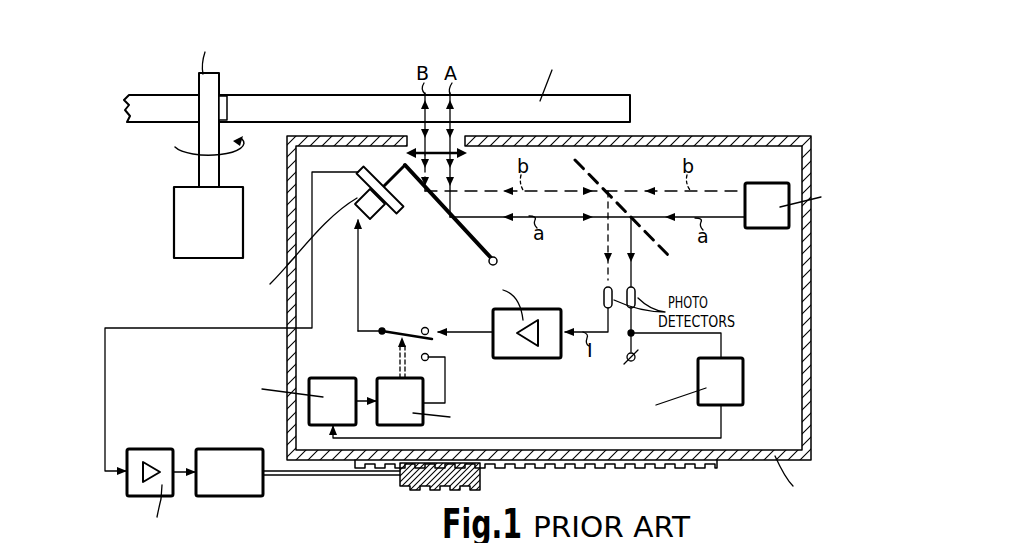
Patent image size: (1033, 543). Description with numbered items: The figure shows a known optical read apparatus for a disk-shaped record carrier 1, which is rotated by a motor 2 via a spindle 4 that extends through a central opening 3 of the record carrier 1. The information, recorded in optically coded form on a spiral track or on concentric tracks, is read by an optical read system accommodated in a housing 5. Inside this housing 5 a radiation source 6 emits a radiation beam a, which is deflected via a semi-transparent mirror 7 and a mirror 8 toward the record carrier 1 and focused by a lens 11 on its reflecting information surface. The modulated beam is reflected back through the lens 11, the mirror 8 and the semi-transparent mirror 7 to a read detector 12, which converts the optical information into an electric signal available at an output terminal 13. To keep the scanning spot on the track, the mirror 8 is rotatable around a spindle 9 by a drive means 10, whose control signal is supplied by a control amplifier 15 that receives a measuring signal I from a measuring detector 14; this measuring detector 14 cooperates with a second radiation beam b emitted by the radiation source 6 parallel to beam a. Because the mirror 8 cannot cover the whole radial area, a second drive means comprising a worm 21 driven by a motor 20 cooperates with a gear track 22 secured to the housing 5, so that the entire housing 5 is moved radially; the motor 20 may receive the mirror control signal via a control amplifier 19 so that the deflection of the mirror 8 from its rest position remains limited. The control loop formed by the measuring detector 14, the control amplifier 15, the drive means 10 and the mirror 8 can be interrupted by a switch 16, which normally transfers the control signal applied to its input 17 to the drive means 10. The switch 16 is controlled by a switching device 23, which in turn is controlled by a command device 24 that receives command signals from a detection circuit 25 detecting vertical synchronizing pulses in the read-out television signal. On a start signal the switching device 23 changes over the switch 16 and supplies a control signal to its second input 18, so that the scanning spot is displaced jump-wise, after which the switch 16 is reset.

The record carrier 1 is at (311, 101).
The motor 2 is at (188, 223).
The central opening 3 is at (228, 100).
The spindle 4 is at (200, 76).
The housing 5 is at (765, 137).
The radiation source 6 is at (771, 231).
The semi-transparent mirror 7 is at (585, 163).
The mirror 8 is at (457, 245).
The spindle 9 is at (500, 265).
The drive means 10 is at (380, 206).
The lens 11 is at (470, 157).
The read detector 12 is at (636, 292).
The output terminal 13 is at (635, 362).
The measuring detector 14 is at (602, 292).
The control amplifier 15 is at (527, 350).
The switch 16 is at (388, 328).
The input 17 is at (428, 328).
The second input 18 is at (429, 355).
The control amplifier 19 is at (163, 446).
The motor 20 is at (236, 446).
The worm 21 is at (478, 480).
The gear track 22 is at (551, 469).
The switching device 23 is at (382, 382).
The command device 24 is at (330, 382).
The detection circuit 25 is at (744, 372).